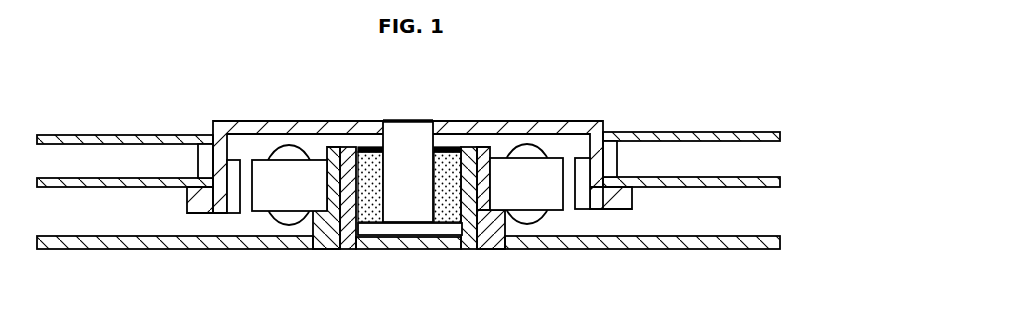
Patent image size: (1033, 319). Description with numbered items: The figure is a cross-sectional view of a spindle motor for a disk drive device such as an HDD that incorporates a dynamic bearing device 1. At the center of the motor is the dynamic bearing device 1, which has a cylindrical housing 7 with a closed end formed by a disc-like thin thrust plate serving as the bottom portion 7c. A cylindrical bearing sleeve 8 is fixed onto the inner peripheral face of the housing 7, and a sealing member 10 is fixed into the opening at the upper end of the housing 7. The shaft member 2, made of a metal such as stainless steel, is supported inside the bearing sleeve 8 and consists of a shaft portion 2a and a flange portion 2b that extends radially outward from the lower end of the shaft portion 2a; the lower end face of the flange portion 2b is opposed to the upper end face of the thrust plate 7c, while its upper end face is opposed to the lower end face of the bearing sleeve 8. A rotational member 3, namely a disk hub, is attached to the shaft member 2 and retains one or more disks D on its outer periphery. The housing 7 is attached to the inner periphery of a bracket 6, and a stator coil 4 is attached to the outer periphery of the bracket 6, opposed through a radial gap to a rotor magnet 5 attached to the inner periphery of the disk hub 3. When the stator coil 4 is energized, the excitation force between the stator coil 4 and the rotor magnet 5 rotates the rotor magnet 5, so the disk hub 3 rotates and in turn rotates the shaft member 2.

The dynamic bearing device 1 is at (468, 137).
The shaft member 2 is at (424, 117).
The shaft portion 2a is at (405, 130).
The flange portion 2b is at (385, 232).
The rotational member (disk hub) 3 is at (582, 125).
The stator coil 4 is at (556, 200).
The rotor magnet 5 is at (583, 205).
The bracket 6 is at (493, 238).
The housing 7 is at (343, 148).
The bottom portion (thrust plate) 7c is at (427, 242).
The bearing sleeve 8 is at (443, 148).
The sealing member 10 is at (368, 148).
The disk D is at (709, 132).